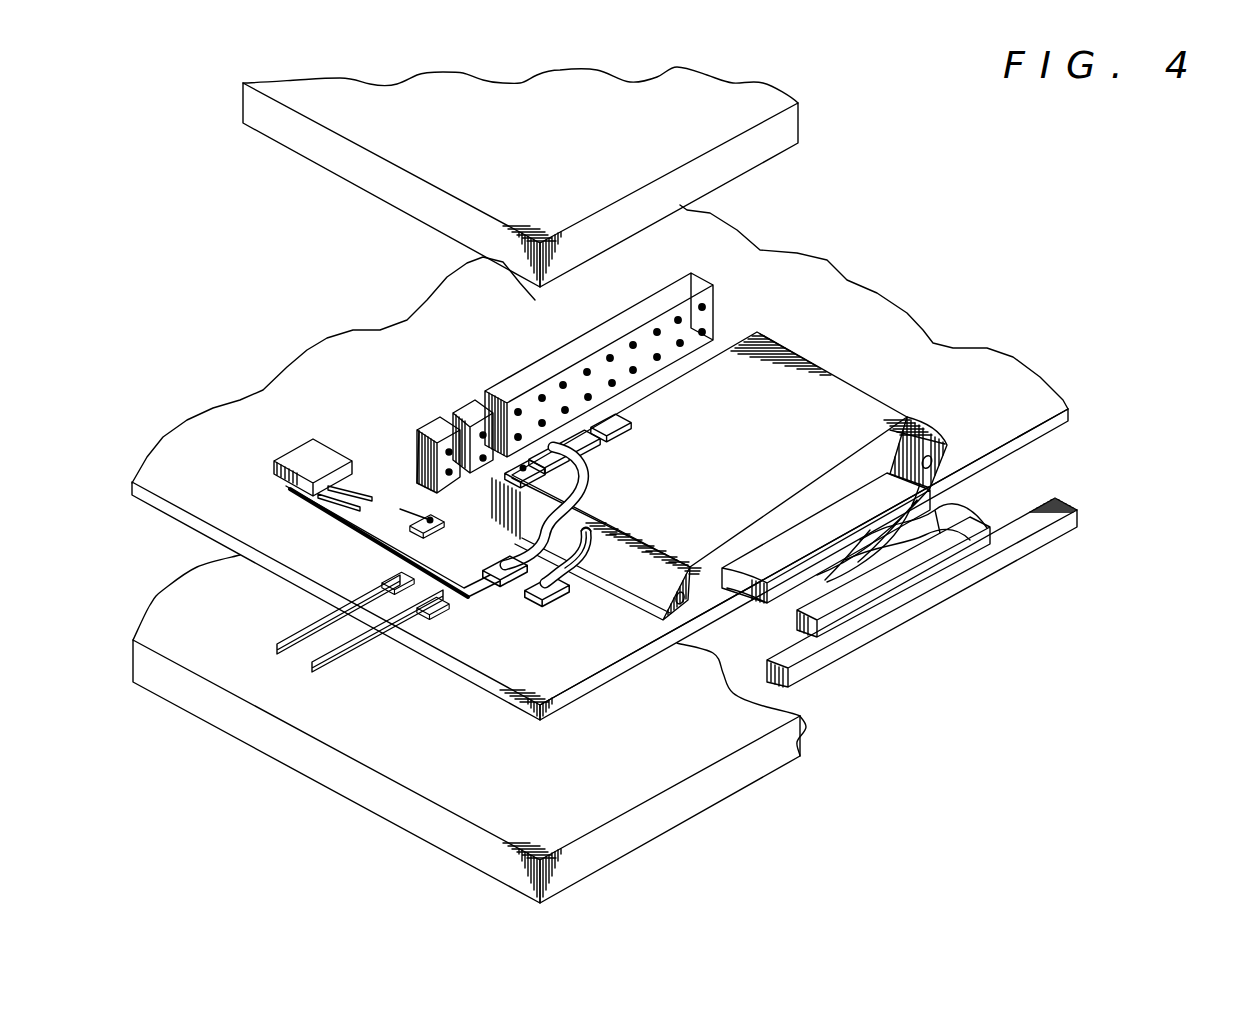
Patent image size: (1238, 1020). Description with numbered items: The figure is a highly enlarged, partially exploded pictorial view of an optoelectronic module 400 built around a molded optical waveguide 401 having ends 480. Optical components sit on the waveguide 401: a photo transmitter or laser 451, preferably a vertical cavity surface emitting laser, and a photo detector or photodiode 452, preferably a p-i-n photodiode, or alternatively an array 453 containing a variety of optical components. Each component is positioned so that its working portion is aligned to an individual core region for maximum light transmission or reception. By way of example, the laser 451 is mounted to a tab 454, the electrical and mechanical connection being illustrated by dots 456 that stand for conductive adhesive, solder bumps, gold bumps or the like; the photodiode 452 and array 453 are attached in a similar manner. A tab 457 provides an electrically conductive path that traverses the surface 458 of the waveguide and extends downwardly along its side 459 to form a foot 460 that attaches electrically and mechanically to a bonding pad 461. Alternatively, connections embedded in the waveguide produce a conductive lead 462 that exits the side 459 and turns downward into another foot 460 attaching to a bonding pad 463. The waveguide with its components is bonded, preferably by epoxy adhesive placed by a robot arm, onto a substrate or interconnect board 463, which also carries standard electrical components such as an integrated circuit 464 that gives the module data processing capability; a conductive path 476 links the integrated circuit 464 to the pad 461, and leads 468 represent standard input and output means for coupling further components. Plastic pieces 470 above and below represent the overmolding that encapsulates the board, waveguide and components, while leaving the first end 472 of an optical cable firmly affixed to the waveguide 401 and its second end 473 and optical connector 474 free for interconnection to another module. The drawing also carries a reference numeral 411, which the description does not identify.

The optoelectronic module 400 is at (1043, 176).
The molded optical waveguide 401 is at (868, 390).
The direction of optical coupling 411 is at (1075, 456).
The photo transmitter or laser 451 is at (413, 437).
The photo detector or photodiode 452 is at (453, 410).
The array 453 is at (537, 362).
The tab 454 is at (503, 478).
The dots 456 is at (424, 468).
The tab 457 is at (590, 470).
The surface 458 is at (756, 463).
The side 459 is at (645, 579).
The foot 460 is at (513, 552).
The bonding pad 461 is at (490, 564).
The conductive lead 462 is at (586, 530).
The interconnect board 463 is at (212, 405).
The integrated circuit 464 is at (270, 464).
The leads 468 is at (285, 640).
The plastic pieces 470 is at (572, 150).
The first end 472 is at (770, 605).
The second end 473 is at (987, 530).
The optical connector 474 is at (818, 672).
The conductive path 476 is at (487, 593).
The ends 480 is at (800, 352).